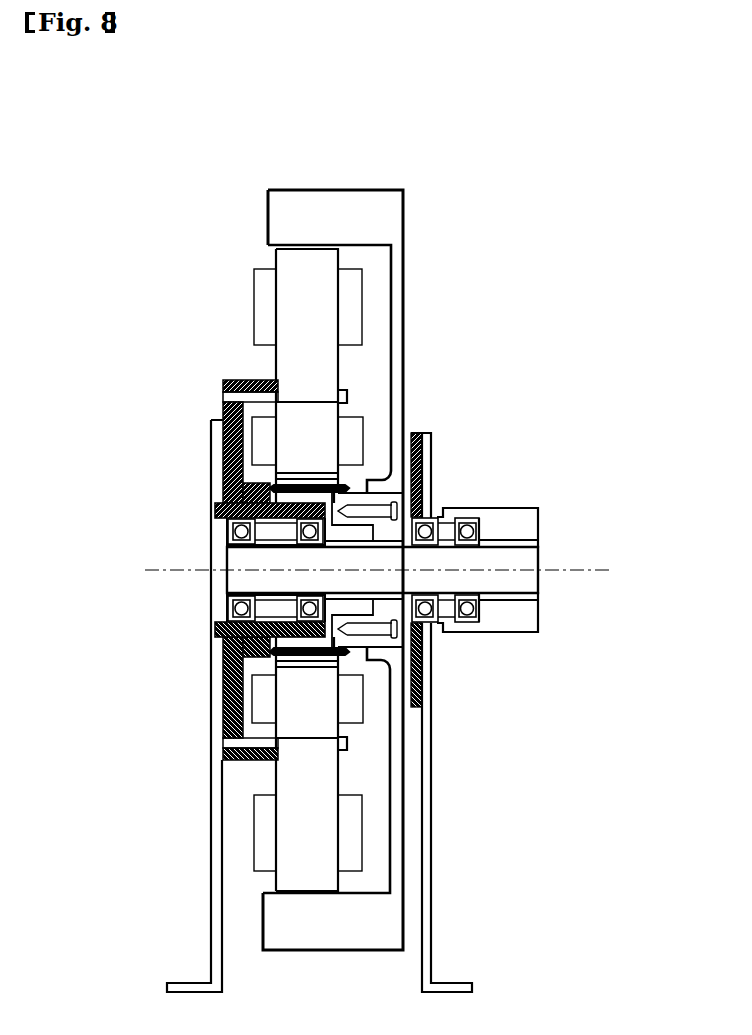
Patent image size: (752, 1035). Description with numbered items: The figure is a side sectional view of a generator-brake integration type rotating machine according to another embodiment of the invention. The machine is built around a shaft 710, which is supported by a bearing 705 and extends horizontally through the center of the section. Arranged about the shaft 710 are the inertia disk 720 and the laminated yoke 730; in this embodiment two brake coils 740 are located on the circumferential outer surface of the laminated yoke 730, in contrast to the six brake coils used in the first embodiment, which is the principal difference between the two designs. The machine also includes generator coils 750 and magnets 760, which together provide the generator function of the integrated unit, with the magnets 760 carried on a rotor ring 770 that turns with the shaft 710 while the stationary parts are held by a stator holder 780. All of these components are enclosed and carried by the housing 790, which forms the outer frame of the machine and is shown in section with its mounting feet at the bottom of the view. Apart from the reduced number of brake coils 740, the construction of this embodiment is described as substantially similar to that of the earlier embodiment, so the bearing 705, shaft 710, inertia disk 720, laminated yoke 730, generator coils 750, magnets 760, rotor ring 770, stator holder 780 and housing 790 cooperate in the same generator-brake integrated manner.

The bearing 705 is at (477, 527).
The shaft 710 is at (525, 562).
The inertia disk 720 is at (370, 927).
The laminated yoke 730 is at (297, 857).
The brake coils 740 is at (347, 830).
The generator coils 750 is at (348, 707).
The magnets 760 is at (222, 668).
The rotor ring 770 is at (218, 618).
The stator holder 780 is at (225, 489).
The housing 790 is at (423, 977).